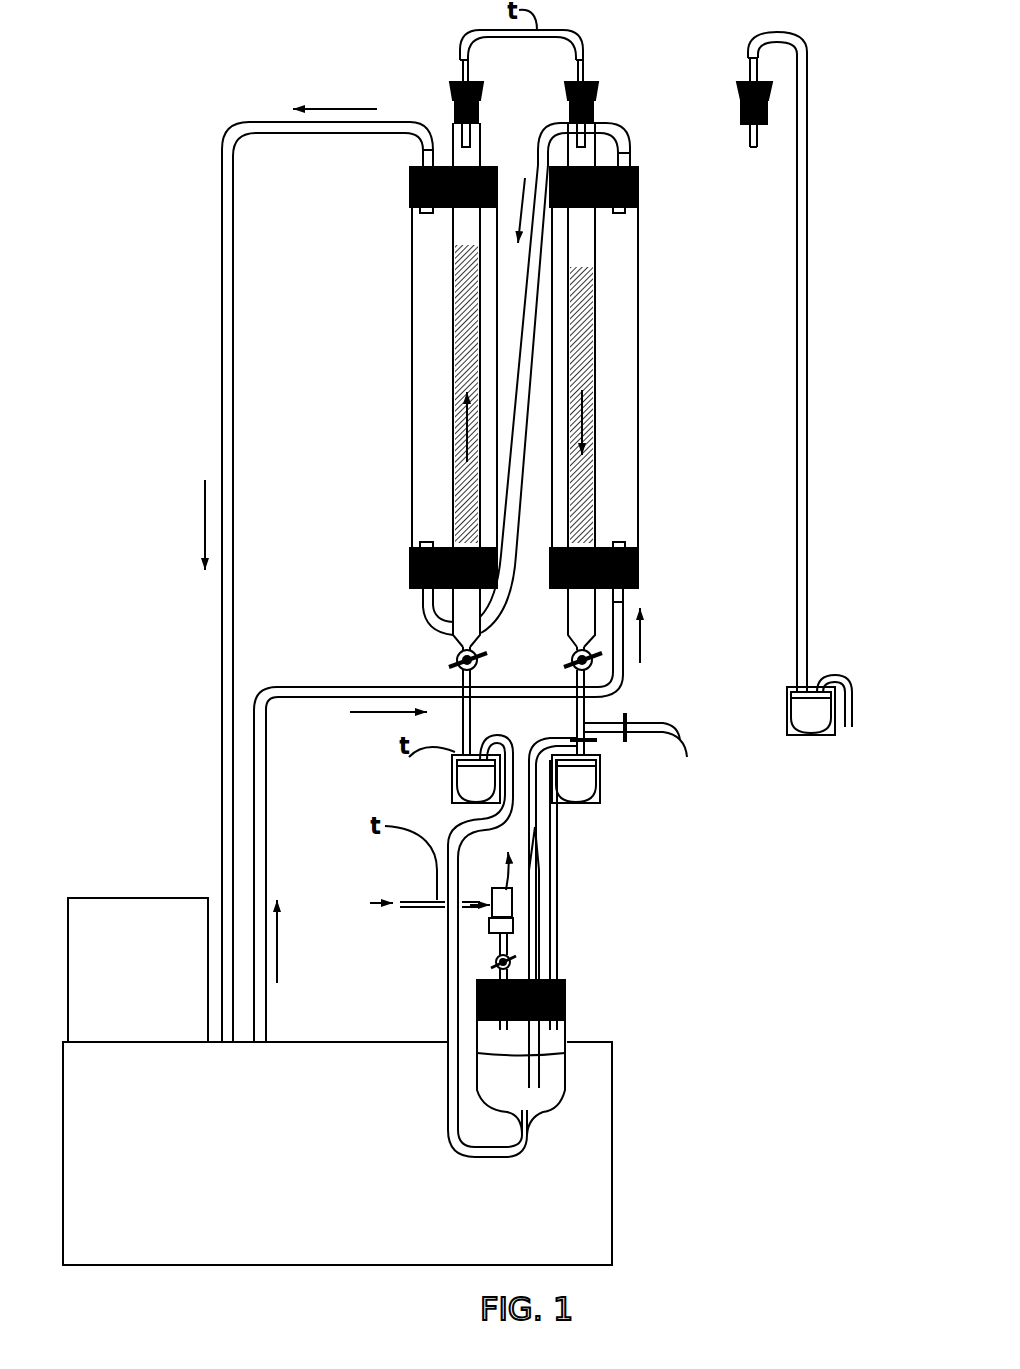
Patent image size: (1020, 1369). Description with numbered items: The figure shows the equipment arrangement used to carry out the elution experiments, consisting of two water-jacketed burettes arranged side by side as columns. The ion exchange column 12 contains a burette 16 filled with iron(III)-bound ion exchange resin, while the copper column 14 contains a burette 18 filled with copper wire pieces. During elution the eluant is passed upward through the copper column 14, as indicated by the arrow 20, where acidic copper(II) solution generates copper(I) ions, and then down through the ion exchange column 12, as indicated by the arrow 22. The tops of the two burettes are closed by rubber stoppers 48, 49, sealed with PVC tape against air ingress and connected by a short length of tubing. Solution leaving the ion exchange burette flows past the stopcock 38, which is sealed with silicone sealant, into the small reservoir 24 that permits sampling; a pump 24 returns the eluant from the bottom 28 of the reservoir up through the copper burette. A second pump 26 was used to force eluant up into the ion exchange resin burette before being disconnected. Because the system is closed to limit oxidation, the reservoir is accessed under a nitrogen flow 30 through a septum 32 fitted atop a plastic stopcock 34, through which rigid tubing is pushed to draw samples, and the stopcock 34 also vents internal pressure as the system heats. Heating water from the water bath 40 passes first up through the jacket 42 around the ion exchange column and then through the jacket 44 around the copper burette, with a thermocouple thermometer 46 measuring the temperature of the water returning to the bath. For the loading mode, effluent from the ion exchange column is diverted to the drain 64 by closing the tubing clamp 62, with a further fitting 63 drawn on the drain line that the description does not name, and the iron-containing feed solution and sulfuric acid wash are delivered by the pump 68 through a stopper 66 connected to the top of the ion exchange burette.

The ion exchange column 12 is at (640, 288).
The copper column 14 is at (410, 270).
The burette 16 is at (580, 353).
The burette 18 is at (468, 337).
The arrow 20 is at (467, 430).
The arrow 22 is at (596, 421).
The reservoir 24 is at (478, 777).
The pump 26 is at (575, 786).
The bottom of the reservoir 28 is at (565, 1102).
The nitrogen flow 30 is at (412, 903).
The septum 32 is at (478, 933).
The stopcock 34 is at (482, 963).
The stopcock 38 is at (557, 668).
The water bath 40 is at (337, 1153).
The jacket 42 is at (620, 500).
The jacket 44 is at (432, 500).
The thermocouple thermometer 46 is at (138, 970).
The rubber stopper 48 is at (566, 100).
The rubber stopper 49 is at (448, 100).
The tubing clamp 62 is at (604, 742).
The valve 63 is at (634, 743).
The drain 64 is at (690, 734).
The stopper 66 is at (740, 106).
The pump 68 is at (810, 712).